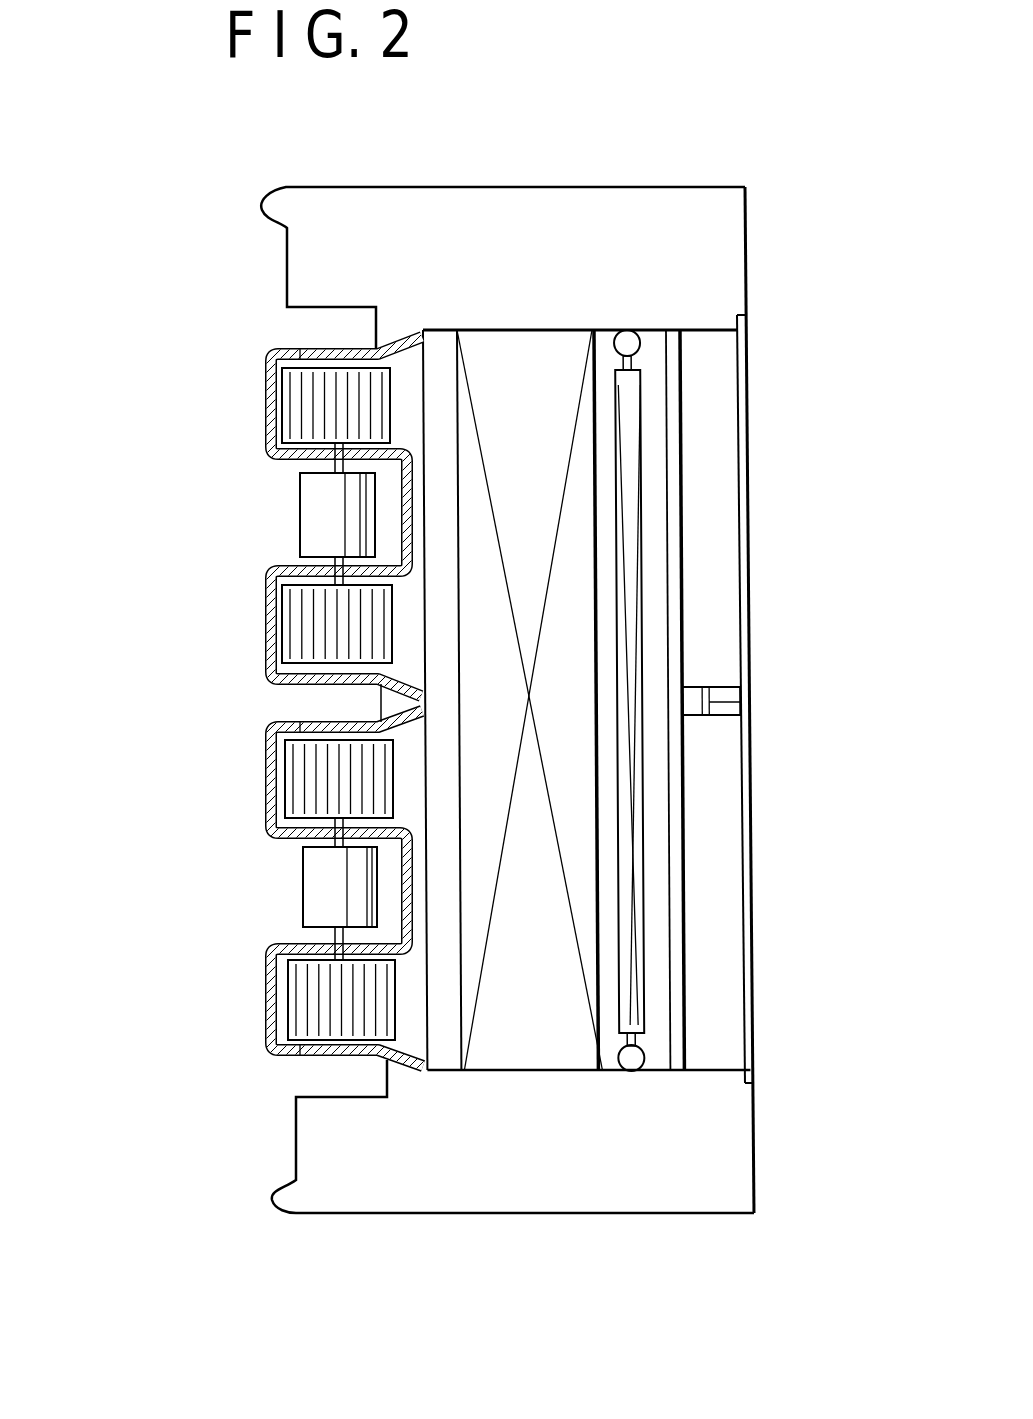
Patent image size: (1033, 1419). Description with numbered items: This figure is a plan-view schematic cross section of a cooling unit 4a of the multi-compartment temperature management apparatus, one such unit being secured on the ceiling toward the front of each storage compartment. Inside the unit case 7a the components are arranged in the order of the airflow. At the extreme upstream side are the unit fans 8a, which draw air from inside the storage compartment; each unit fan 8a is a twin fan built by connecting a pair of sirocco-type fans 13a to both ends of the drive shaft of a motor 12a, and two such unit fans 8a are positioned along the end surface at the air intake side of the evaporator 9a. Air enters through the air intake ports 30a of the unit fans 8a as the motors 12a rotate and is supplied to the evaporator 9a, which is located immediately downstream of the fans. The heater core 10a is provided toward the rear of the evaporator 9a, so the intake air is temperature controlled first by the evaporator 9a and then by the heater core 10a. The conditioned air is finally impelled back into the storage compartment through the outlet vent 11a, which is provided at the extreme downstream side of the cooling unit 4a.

The cooling unit 4a is at (756, 468).
The unit case 7a is at (507, 1187).
The unit fan 8a is at (262, 574).
The evaporator 9a is at (513, 355).
The heater core 10a is at (632, 945).
The outlet vent 11a is at (712, 560).
The motor 12a is at (322, 511).
The sirocco-type fan 13a is at (290, 397).
The air intake port 30a is at (312, 350).